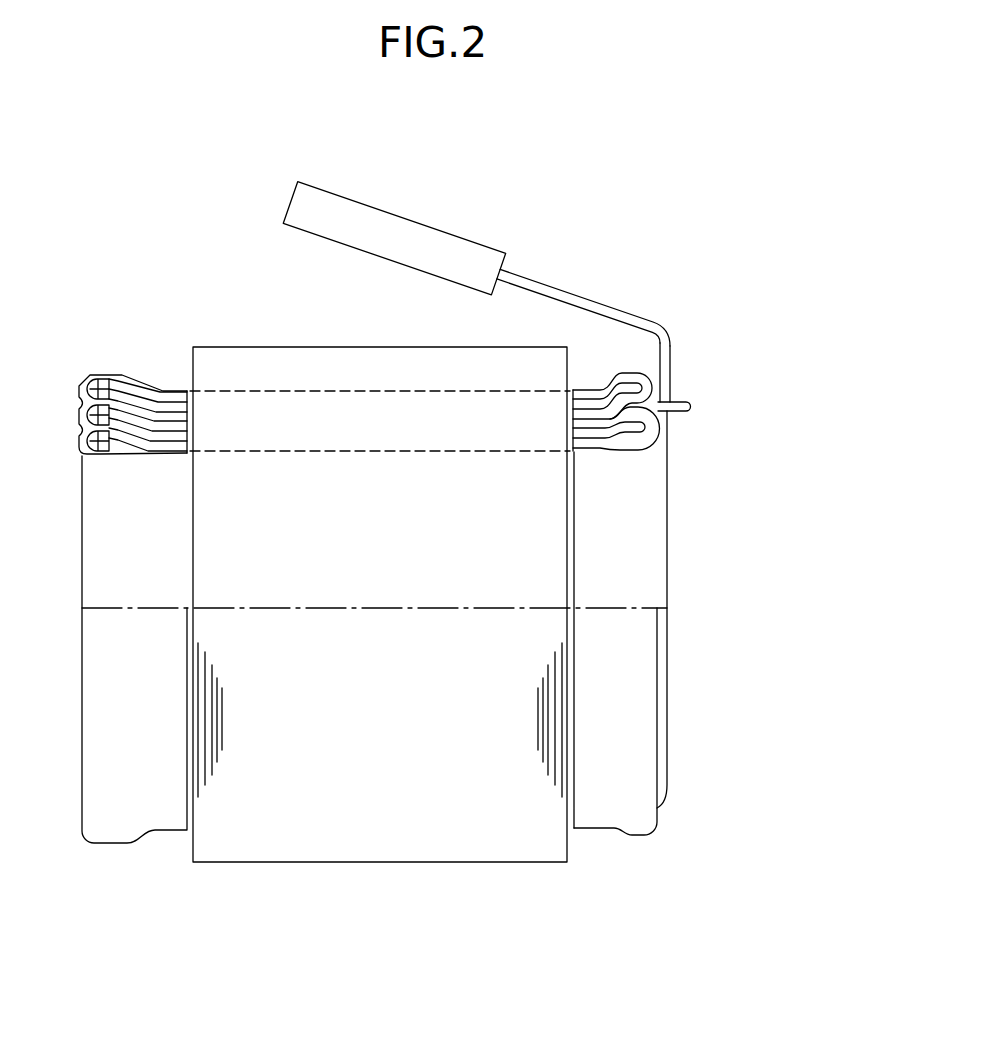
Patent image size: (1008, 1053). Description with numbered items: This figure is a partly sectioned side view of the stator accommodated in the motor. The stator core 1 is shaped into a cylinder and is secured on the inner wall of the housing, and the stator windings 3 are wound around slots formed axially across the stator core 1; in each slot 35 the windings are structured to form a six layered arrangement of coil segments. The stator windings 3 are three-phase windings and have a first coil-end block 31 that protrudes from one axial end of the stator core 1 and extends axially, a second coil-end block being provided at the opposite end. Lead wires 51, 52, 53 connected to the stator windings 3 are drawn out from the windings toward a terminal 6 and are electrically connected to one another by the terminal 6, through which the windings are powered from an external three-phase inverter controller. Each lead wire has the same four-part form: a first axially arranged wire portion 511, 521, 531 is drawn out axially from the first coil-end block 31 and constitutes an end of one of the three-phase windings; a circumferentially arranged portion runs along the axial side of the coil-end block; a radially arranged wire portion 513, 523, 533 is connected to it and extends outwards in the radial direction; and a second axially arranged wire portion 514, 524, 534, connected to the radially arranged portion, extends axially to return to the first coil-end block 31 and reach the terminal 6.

The stator core 1 is at (233, 375).
The stator windings 3 is at (695, 716).
The first coil-end block 31 is at (635, 772).
The slot 35 is at (232, 402).
The terminal 6 is at (407, 233).
The lead wire 51 is at (688, 357).
The lead wire 52 is at (688, 357).
The lead wire 53 is at (691, 382).
The first axially arranged wire portion 511 is at (768, 440).
The first axially arranged wire portion 521 is at (768, 440).
The first axially arranged wire portion 531 is at (677, 411).
The radially arranged wire portion 513 is at (762, 341).
The radially arranged wire portion 523 is at (762, 341).
The radially arranged wire portion 533 is at (668, 357).
The second axially arranged wire portion 514 is at (648, 291).
The second axially arranged wire portion 524 is at (648, 291).
The second axially arranged wire portion 534 is at (563, 285).